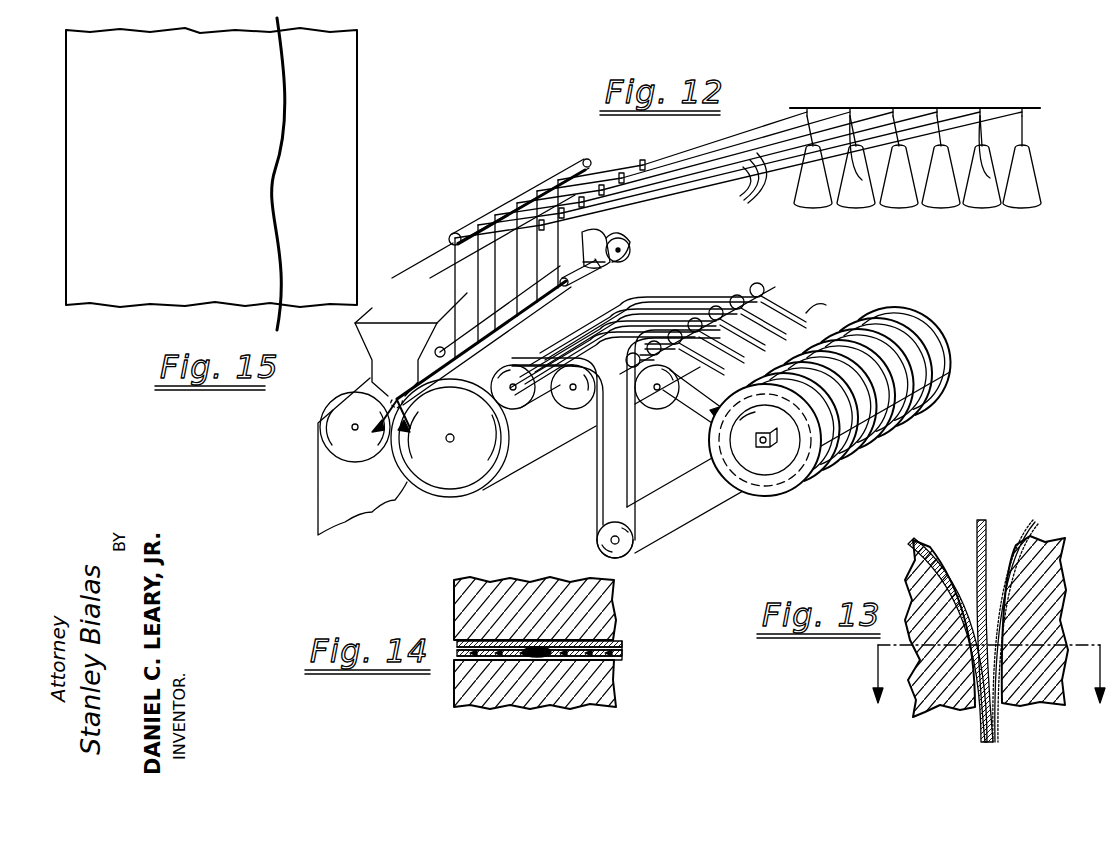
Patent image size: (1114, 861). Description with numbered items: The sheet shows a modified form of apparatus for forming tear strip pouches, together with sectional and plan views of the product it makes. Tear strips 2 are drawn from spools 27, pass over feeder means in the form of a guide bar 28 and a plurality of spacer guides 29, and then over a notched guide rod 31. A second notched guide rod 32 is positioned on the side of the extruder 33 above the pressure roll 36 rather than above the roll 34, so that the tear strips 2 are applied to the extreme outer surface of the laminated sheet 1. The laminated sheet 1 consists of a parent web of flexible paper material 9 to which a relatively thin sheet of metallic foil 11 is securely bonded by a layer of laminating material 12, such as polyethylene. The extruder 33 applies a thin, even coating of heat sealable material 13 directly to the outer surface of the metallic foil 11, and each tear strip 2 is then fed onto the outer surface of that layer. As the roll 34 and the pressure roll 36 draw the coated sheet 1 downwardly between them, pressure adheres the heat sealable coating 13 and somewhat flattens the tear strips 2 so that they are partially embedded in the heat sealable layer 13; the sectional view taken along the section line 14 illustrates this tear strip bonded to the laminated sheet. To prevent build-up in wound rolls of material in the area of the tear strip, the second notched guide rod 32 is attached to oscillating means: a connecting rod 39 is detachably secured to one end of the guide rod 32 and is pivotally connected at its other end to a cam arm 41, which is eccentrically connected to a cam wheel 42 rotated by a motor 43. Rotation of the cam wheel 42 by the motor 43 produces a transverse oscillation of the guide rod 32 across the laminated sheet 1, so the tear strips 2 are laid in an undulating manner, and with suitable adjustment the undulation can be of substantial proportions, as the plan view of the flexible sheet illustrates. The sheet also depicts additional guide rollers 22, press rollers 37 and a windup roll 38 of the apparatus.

In FIG. 12, the laminated sheet 1 is at (318, 506).
In FIG. 15, the tear strip 2 is at (281, 318).
In FIG. 12, the tear strip 2 is at (752, 190).
In FIG. 14, the tear strip 2 is at (540, 655).
In FIG. 13, the tear strip 2 is at (1036, 522).
In FIG. 14, the parent web 9 is at (622, 644).
In FIG. 14, the metallic foil 11 is at (622, 653).
In FIG. 13, the metallic foil 11 is at (935, 548).
In FIG. 14, the laminating material 12 is at (622, 648).
In FIG. 12, the heat sealable material 13 is at (406, 404).
In FIG. 14, the heat sealable material 13 is at (622, 659).
In FIG. 13, the heat sealable material 13 is at (982, 520).
In FIG. 13, the section line 14 is at (990, 685).
In FIG. 12, the guide rollers 22 is at (523, 405).
In FIG. 12, the spool 27 is at (813, 203).
In FIG. 12, the guide bar 28 is at (968, 108).
In FIG. 12, the spacer guide 29 is at (645, 160).
In FIG. 12, the notched guide rod 31 is at (540, 190).
In FIG. 12, the second notched guide rod 32 is at (568, 283).
In FIG. 12, the extruder 33 is at (400, 356).
In FIG. 12, the roll 34 is at (318, 440).
In FIG. 12, the pressure roll 36 is at (466, 414).
In FIG. 12, the press rollers 37 is at (755, 285).
In FIG. 12, the windup roll 38 is at (790, 478).
In FIG. 12, the connecting rod 39 is at (597, 264).
In FIG. 12, the cam arm 41 is at (626, 240).
In FIG. 12, the cam wheel 42 is at (630, 256).
In FIG. 12, the motor 43 is at (586, 256).